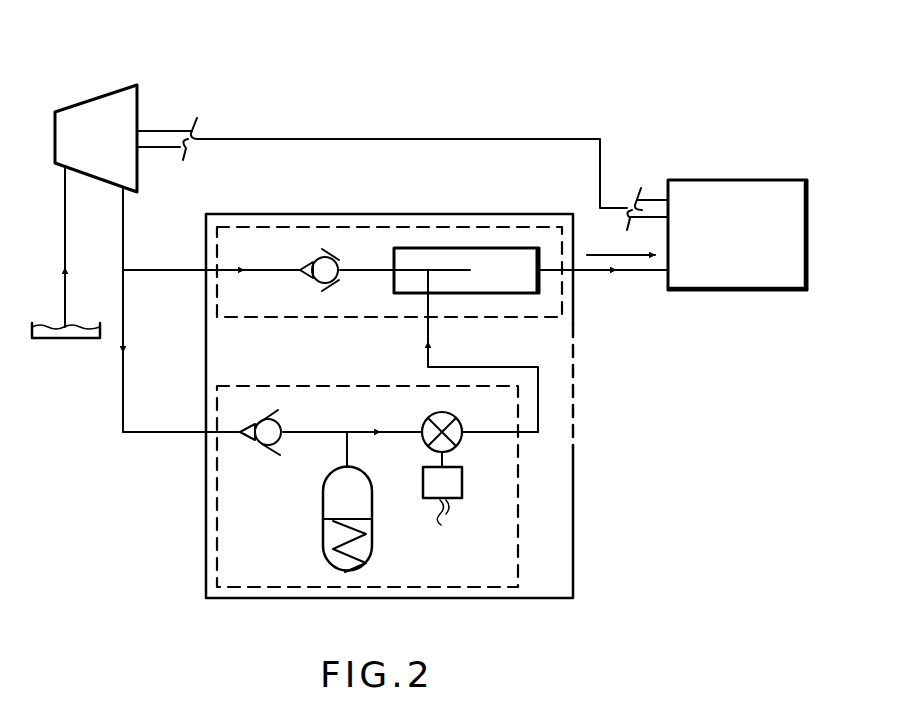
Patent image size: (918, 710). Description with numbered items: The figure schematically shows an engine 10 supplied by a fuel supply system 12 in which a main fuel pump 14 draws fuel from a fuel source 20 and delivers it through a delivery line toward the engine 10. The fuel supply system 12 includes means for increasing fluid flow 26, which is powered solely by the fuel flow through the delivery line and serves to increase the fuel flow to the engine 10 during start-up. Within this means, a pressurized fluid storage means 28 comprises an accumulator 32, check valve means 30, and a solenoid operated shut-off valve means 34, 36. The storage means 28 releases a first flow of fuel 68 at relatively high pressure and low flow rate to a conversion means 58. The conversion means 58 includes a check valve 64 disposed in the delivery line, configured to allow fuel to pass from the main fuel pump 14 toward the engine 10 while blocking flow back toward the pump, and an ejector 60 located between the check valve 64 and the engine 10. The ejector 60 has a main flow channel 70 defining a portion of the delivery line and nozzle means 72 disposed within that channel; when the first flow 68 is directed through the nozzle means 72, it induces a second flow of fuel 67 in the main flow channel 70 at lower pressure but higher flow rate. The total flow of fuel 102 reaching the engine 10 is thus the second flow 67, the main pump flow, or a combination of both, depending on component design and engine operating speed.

The engine 10 is at (756, 250).
The fuel supply system 12 is at (380, 100).
The main fuel pump 14 is at (112, 156).
The fuel source 20 is at (35, 343).
The means for increasing fluid flow 26 is at (575, 577).
The pressurized fluid storage means 28 is at (518, 477).
The check valve means 30 is at (278, 446).
The accumulator 32 is at (325, 561).
The solenoid operated shut-off valve means 34 is at (440, 411).
The solenoid operated shut-off valve means 36 is at (430, 502).
The conversion means 58 is at (285, 320).
The ejector 60 is at (415, 248).
The check valve 64 is at (336, 250).
The second flow of fuel 67 is at (632, 272).
The first flow of fuel 68 is at (425, 347).
The main flow channel 70 is at (518, 257).
The nozzle means 72 is at (470, 270).
The total flow of fuel 102 is at (622, 255).